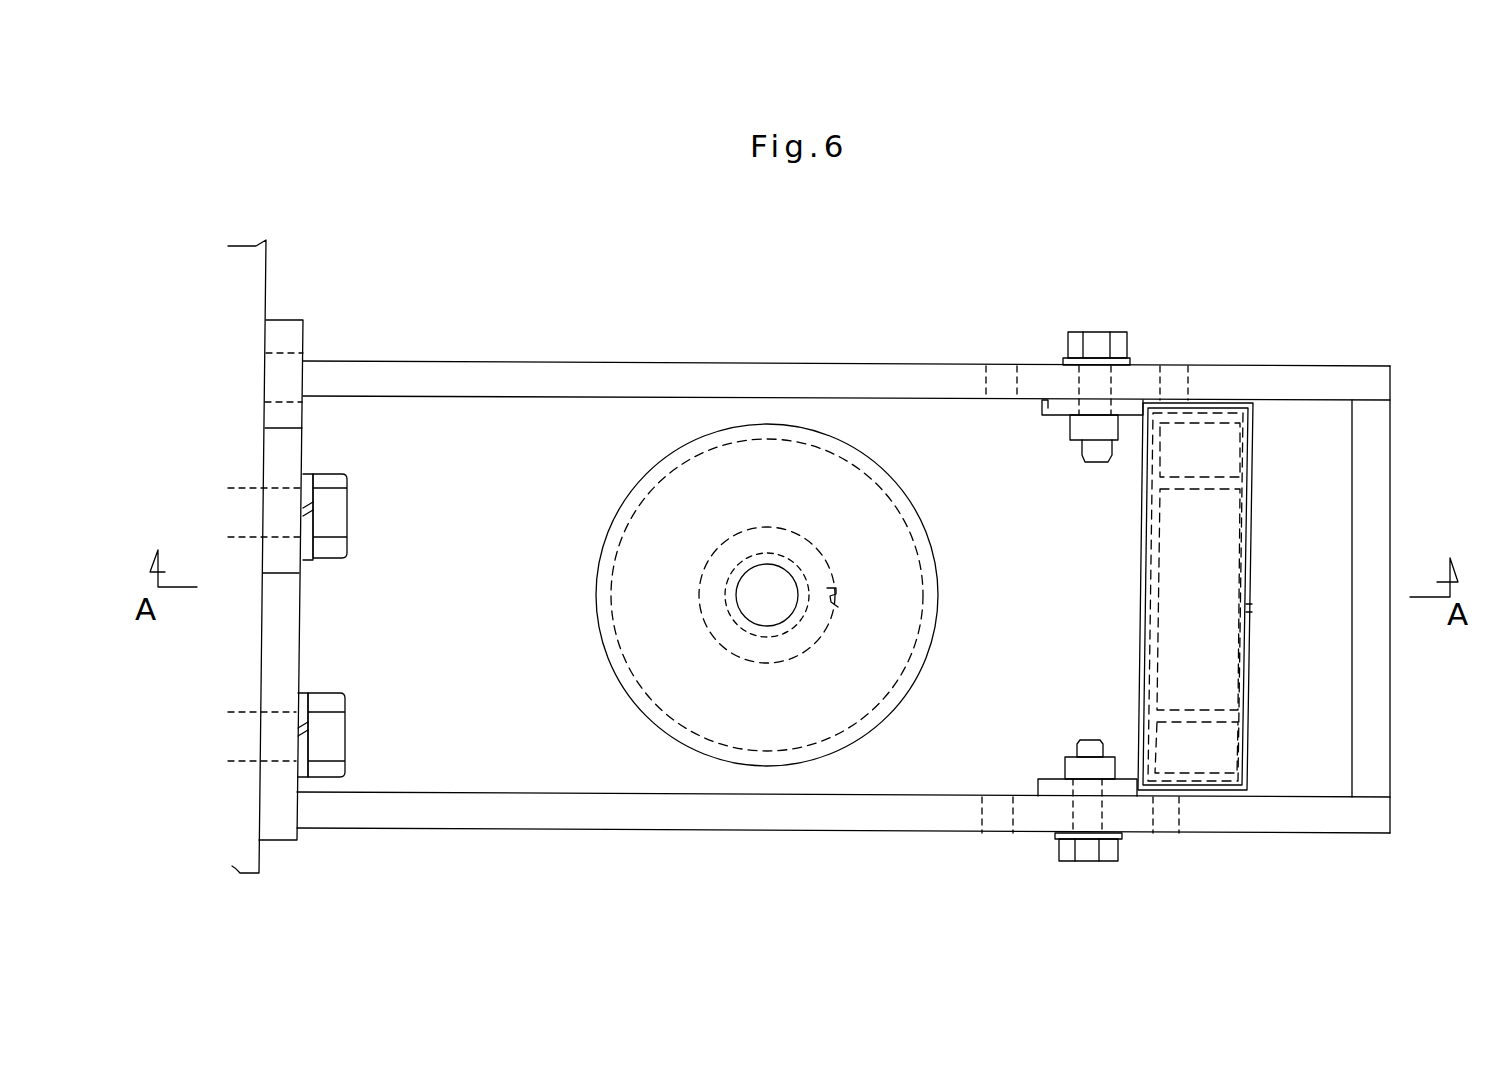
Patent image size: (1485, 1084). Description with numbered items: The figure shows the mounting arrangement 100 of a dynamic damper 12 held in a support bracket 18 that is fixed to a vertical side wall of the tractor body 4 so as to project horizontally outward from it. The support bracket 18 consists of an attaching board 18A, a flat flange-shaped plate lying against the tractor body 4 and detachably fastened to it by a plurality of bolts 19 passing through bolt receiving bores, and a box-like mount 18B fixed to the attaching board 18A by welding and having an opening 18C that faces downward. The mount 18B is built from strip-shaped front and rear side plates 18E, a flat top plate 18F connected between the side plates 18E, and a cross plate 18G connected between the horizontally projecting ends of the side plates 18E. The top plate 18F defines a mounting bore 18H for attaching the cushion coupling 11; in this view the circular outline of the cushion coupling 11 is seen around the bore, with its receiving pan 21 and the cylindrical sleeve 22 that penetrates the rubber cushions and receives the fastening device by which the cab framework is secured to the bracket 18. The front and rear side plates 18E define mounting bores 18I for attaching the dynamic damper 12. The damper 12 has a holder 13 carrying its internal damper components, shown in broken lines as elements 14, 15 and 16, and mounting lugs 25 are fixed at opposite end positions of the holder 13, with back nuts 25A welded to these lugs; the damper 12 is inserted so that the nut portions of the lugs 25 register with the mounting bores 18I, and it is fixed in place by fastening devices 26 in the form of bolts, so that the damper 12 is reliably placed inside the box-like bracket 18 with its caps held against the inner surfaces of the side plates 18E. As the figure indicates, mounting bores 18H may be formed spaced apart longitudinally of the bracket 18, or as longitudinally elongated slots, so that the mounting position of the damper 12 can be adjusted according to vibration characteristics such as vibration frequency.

The roller supporting apparatus 100 is at (713, 283).
The tractor body 4 is at (268, 258).
The support bracket 18 is at (830, 328).
The attaching board 18A is at (303, 333).
The box-like mount 18B is at (790, 834).
The opening 18C is at (460, 646).
The front and rear side plates 18E is at (601, 380).
The top plate 18F is at (423, 768).
The cross plate 18G is at (1370, 718).
The mounting bore 18H is at (838, 600).
The mounting bores 18I is at (993, 380).
The bolt 19 is at (333, 510).
The cushion coupling 11 is at (605, 680).
The receiving pan 21 is at (607, 545).
The cylindrical sleeve 22 is at (697, 612).
The dynamic damper 12 is at (1260, 552).
The holder 13 is at (1143, 600).
The roller 14 is at (1155, 546).
The housing side wall 15 is at (1253, 608).
The bearings 16 is at (1203, 477).
The mounting lugs 25 is at (1050, 407).
The back nuts 25A is at (1070, 433).
The fastening devices 26 is at (1098, 345).